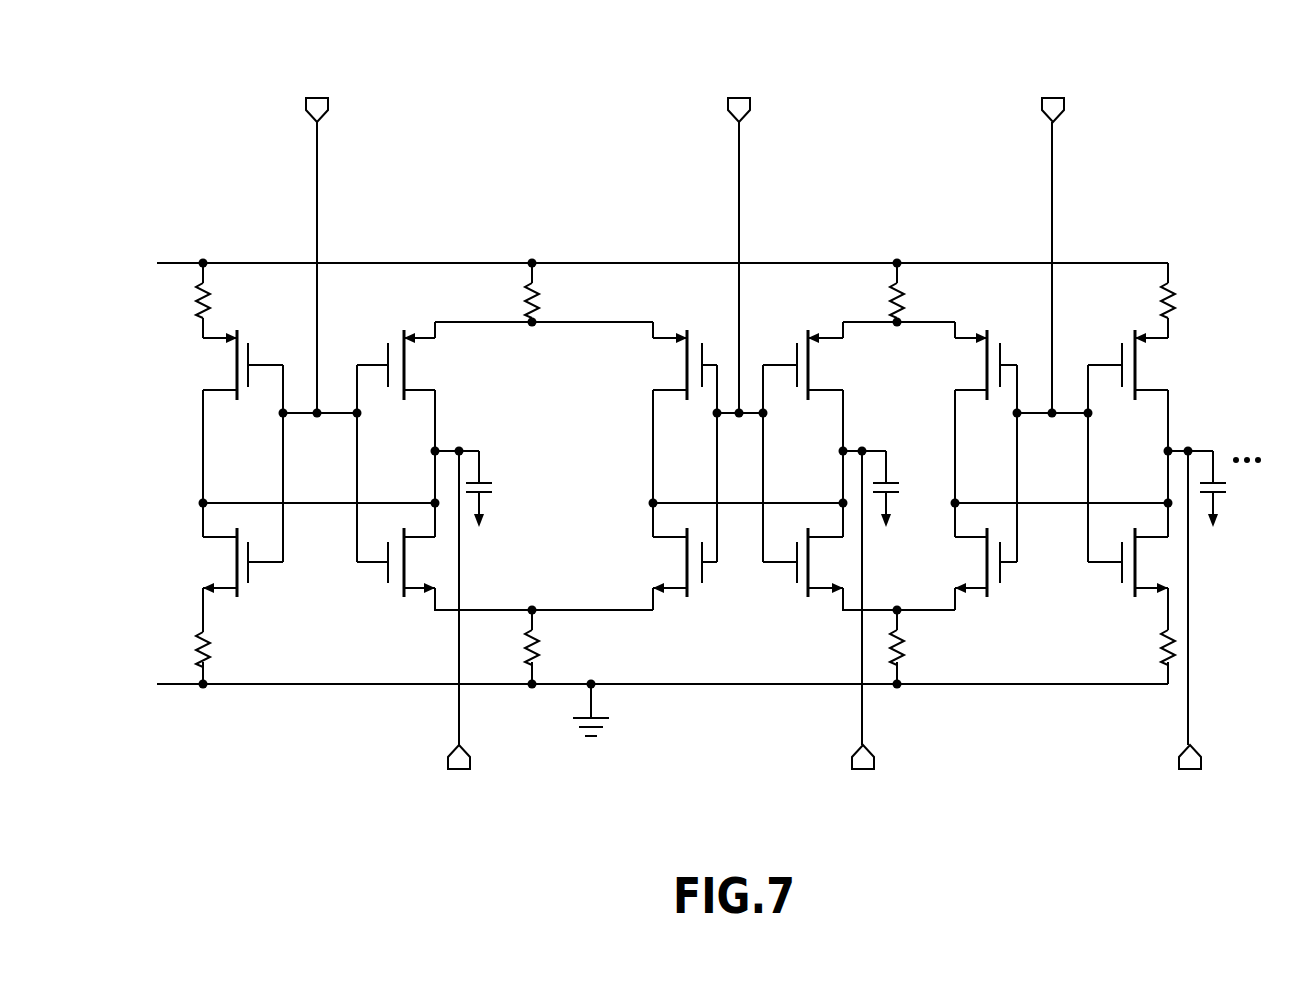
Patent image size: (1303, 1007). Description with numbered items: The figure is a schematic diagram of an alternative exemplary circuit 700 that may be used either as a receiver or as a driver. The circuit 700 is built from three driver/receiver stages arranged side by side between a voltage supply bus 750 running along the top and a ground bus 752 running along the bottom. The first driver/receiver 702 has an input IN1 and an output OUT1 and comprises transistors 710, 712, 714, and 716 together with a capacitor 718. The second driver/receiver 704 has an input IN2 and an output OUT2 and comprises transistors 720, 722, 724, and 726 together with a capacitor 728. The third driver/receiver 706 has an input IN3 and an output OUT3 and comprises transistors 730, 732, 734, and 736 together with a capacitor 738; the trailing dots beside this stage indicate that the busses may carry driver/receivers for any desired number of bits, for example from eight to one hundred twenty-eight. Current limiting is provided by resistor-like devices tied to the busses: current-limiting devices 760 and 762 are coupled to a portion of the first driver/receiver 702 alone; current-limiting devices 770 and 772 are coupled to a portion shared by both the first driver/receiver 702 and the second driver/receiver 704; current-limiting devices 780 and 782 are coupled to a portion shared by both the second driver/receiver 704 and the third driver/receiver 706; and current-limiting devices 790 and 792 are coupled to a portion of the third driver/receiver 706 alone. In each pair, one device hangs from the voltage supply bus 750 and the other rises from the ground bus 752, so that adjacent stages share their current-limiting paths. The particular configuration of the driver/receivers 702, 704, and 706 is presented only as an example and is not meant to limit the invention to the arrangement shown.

The circuit 700 is at (500, 190).
The first driver/receiver 702 is at (322, 362).
The second driver/receiver 704 is at (727, 362).
The third driver/receiver 706 is at (1030, 362).
The transistor 710 is at (210, 358).
The transistor 712 is at (210, 566).
The transistor 714 is at (417, 368).
The transistor 716 is at (425, 565).
The capacitor 718 is at (500, 485).
The transistor 720 is at (651, 375).
The transistor 722 is at (665, 568).
The transistor 724 is at (823, 368).
The transistor 726 is at (825, 562).
The capacitor 728 is at (907, 481).
The transistor 730 is at (962, 375).
The transistor 732 is at (975, 570).
The transistor 734 is at (1155, 368).
The transistor 736 is at (1157, 565).
The capacitor 738 is at (1228, 490).
The voltage supply bus 750 is at (173, 263).
The ground bus 752 is at (183, 686).
The current-limiting device 760 is at (218, 300).
The current-limiting device 762 is at (222, 643).
The current-limiting device 770 is at (553, 300).
The current-limiting device 772 is at (548, 648).
The current-limiting device 780 is at (915, 300).
The current-limiting device 782 is at (920, 648).
The current-limiting device 790 is at (1185, 300).
The current-limiting device 792 is at (1140, 648).